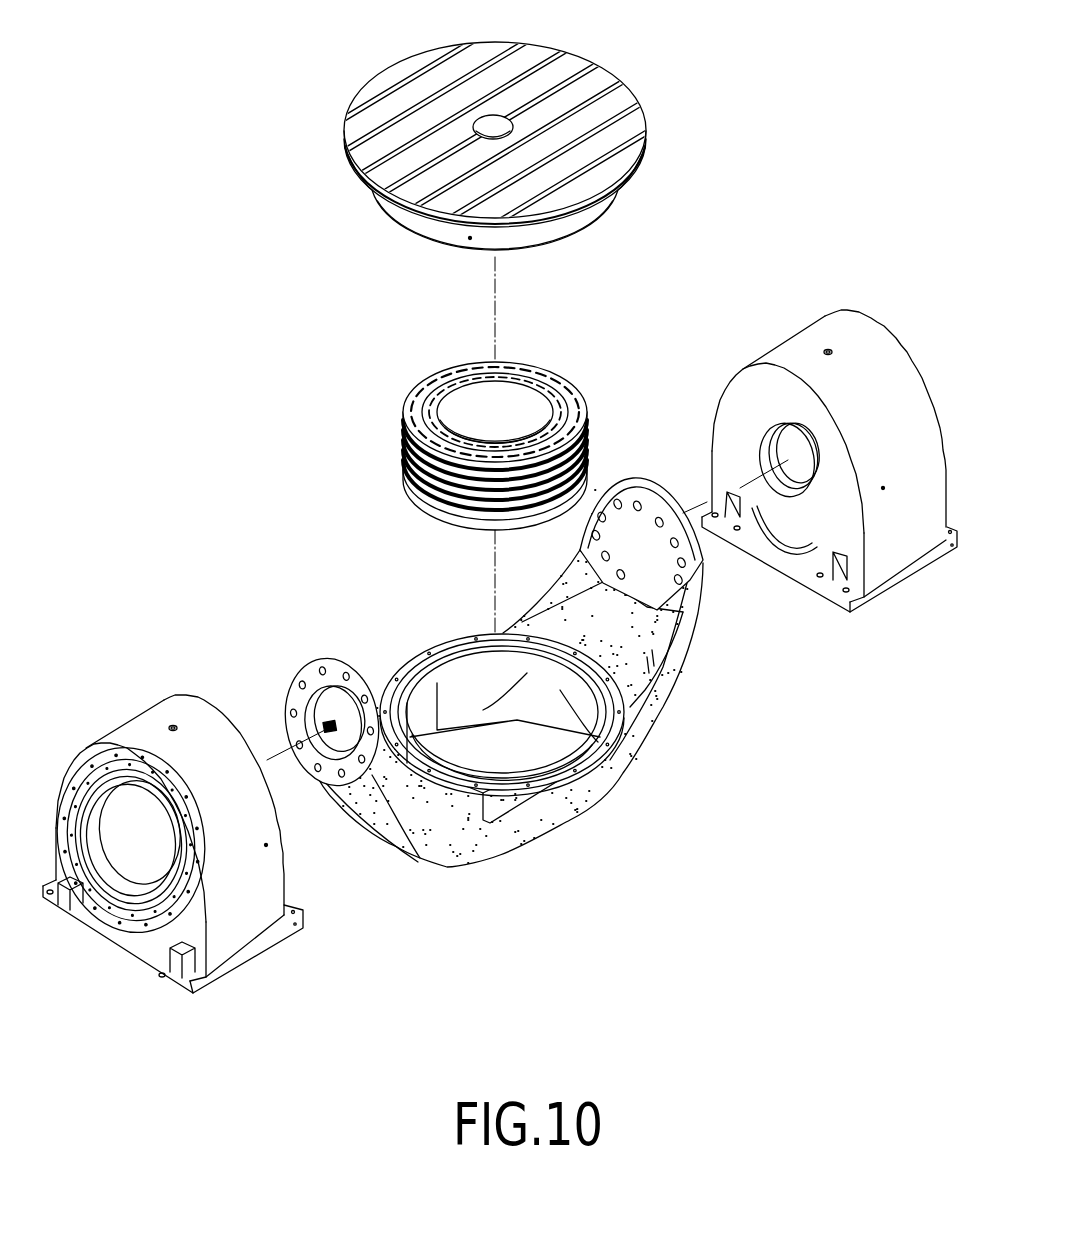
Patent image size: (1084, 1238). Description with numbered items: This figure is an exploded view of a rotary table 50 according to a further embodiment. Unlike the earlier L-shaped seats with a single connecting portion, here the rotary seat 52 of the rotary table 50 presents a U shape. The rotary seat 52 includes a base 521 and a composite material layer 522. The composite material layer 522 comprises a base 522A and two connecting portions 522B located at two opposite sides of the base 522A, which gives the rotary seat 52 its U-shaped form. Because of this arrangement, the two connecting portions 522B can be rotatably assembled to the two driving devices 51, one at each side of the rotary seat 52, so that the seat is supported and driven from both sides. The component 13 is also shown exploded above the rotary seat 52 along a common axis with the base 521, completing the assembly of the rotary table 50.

The rotary table 50 is at (173, 57).
The rotary table disc 13 is at (652, 118).
The driving device 51 is at (139, 706).
The rotary seat 52 is at (270, 447).
The base 521 is at (392, 468).
The composite material layer 522 is at (417, 617).
The base 522A is at (580, 802).
The connecting portion 522B is at (324, 658).